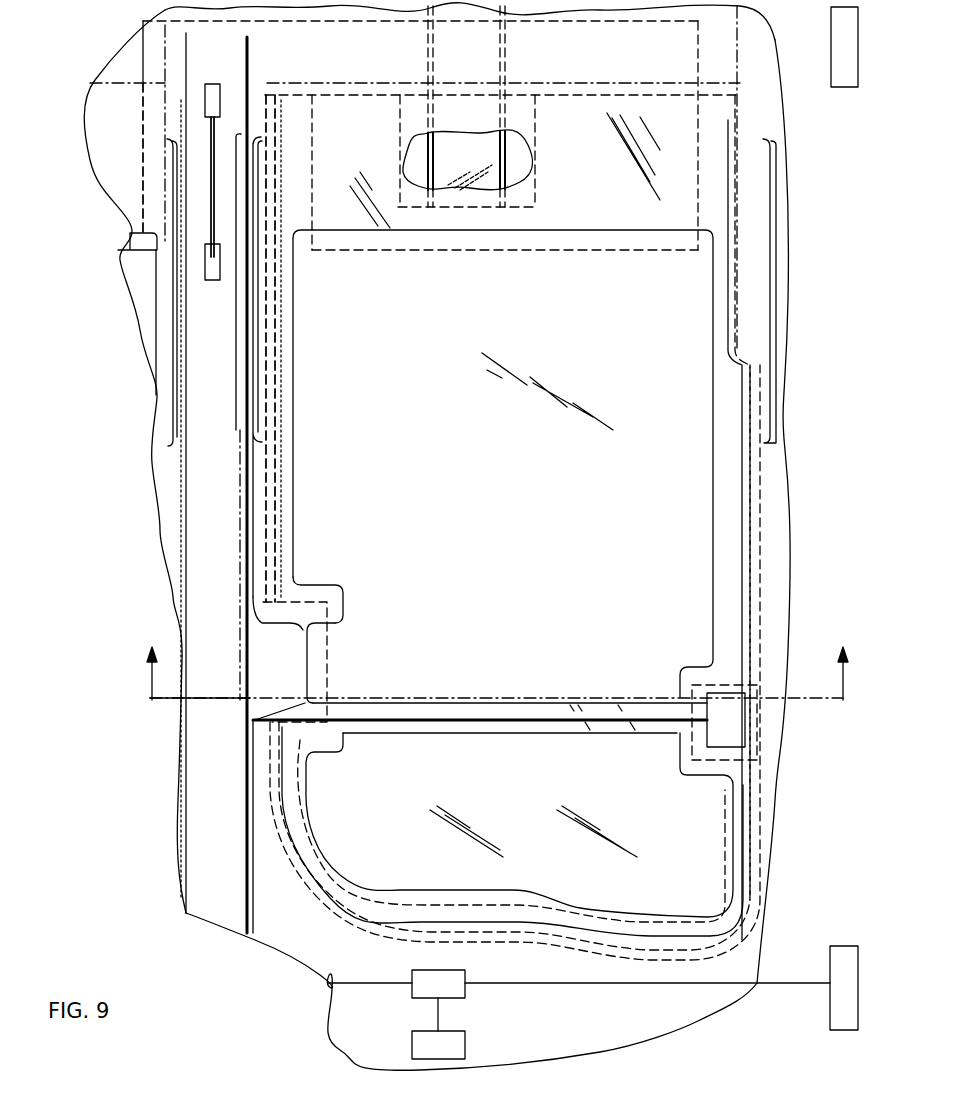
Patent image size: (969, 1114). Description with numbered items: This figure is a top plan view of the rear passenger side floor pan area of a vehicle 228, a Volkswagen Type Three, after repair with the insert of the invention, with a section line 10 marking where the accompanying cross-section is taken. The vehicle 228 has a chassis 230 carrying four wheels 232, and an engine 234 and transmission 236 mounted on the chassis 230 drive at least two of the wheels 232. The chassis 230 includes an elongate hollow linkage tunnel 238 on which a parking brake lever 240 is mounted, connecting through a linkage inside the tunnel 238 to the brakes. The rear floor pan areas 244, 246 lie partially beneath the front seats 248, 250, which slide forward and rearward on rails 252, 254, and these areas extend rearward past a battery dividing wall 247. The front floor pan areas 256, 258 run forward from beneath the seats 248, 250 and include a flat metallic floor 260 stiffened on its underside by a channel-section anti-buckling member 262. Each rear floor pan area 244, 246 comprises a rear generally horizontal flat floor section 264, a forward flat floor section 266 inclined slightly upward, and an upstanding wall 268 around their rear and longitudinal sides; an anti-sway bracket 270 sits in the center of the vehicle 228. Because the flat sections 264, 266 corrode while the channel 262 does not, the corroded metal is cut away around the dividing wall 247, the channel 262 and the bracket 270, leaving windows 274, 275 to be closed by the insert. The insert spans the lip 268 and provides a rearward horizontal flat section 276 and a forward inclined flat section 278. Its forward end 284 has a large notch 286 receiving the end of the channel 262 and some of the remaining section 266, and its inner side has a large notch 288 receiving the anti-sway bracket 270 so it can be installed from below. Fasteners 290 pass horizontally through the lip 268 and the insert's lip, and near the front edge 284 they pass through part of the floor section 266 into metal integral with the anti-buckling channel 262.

The section line 10- 10 is at (496, 673).
The vehicle 228 is at (858, 180).
The chassis 230 is at (828, 432).
The wheels 232 is at (858, 72).
The engine 234 is at (459, 1056).
The transmission 236 is at (459, 995).
The linkage tunnel 238 is at (186, 107).
The parking brake lever 240 is at (213, 200).
The rear floor pan area 244 is at (100, 330).
The rear floor pan area 246 is at (787, 360).
The battery dividing wall 247 is at (530, 722).
The driver's seat 248 is at (140, 110).
The passenger's seat 250 is at (535, 23).
The seat rail 252 is at (173, 330).
The seat rail 254 is at (260, 377).
The front floor pan area 256 is at (197, 20).
The front floor pan area 258 is at (265, 48).
The flat metallic floor 260 is at (143, 82).
The anti-buckling member 262 is at (478, 176).
The rear flat floor section 264 is at (742, 563).
The forward flat floor section 266 is at (481, 125).
The upstanding wall 268 is at (266, 580).
The anti-sway bracket 270 is at (295, 685).
The window 274 is at (300, 495).
The window 275 is at (346, 893).
The rearward flat section 276 is at (541, 685).
The forward flat section 278 is at (508, 283).
The forward end 284 is at (340, 118).
The notch 286 is at (505, 266).
The notch 288 is at (330, 613).
The fasteners 290 is at (563, 113).